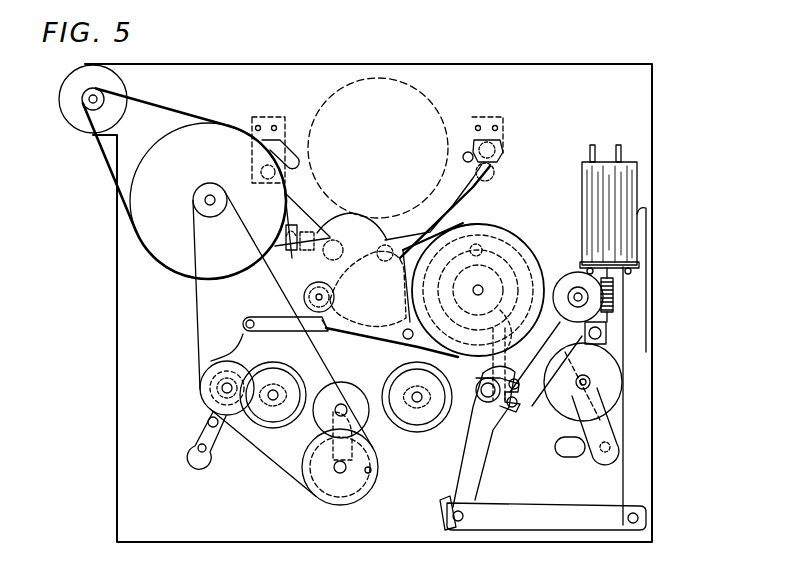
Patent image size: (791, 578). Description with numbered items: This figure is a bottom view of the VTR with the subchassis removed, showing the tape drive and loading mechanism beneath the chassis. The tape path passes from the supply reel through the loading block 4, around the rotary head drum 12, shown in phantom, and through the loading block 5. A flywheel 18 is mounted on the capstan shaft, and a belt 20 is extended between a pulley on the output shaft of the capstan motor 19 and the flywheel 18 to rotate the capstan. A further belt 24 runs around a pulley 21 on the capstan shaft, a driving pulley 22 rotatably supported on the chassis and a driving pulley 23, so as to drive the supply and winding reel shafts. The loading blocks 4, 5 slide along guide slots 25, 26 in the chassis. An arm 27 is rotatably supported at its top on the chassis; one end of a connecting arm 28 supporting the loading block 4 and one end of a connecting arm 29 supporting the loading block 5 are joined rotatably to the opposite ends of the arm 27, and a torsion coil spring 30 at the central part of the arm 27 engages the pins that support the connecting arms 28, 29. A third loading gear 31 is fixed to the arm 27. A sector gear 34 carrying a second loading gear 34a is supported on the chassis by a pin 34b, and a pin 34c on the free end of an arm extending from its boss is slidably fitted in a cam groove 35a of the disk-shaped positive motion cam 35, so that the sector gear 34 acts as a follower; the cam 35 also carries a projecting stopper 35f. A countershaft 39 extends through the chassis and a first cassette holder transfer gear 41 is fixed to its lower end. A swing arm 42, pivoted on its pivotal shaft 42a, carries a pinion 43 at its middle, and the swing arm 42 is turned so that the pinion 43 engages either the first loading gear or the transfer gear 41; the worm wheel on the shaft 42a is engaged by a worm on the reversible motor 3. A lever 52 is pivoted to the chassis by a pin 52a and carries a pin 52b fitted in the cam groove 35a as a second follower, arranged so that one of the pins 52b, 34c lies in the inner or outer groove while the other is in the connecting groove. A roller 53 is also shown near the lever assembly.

The reversible motor 3 is at (628, 188).
The loading block 4 is at (503, 160).
The loading block 5 is at (283, 140).
The rotary head drum 12 is at (445, 82).
The flywheel 18 is at (146, 218).
The capstan motor 19 is at (72, 106).
The belt 20 is at (106, 155).
The pulley 21 is at (209, 183).
The driving pulley 22 is at (366, 490).
The driving pulley 23 is at (200, 390).
The belt 24 is at (192, 294).
The guide slot 25 is at (500, 194).
The guide slot 26 is at (314, 234).
The arm 27 is at (384, 236).
The connecting arm 28 is at (432, 216).
The connecting arm 29 is at (300, 224).
The torsion coil spring 30 is at (342, 241).
The third loading gear 31 is at (324, 322).
The sector gear 34 is at (387, 340).
The second loading gear 34a is at (304, 292).
The pin 34b is at (405, 330).
The pin 34c is at (436, 424).
The positive motion cam 35 is at (530, 273).
The cam groove 35a is at (477, 228).
The stopper 35f is at (490, 248).
The countershaft 39 is at (591, 382).
The first cassette holder transfer gear 41 is at (612, 400).
The swing arm 42 is at (542, 404).
The pivotal shaft 42a is at (602, 292).
The pinion 43 is at (612, 362).
The lever 52 is at (606, 437).
The pin 52a is at (606, 333).
The pin 52b is at (477, 353).
The roller 53 is at (500, 414).